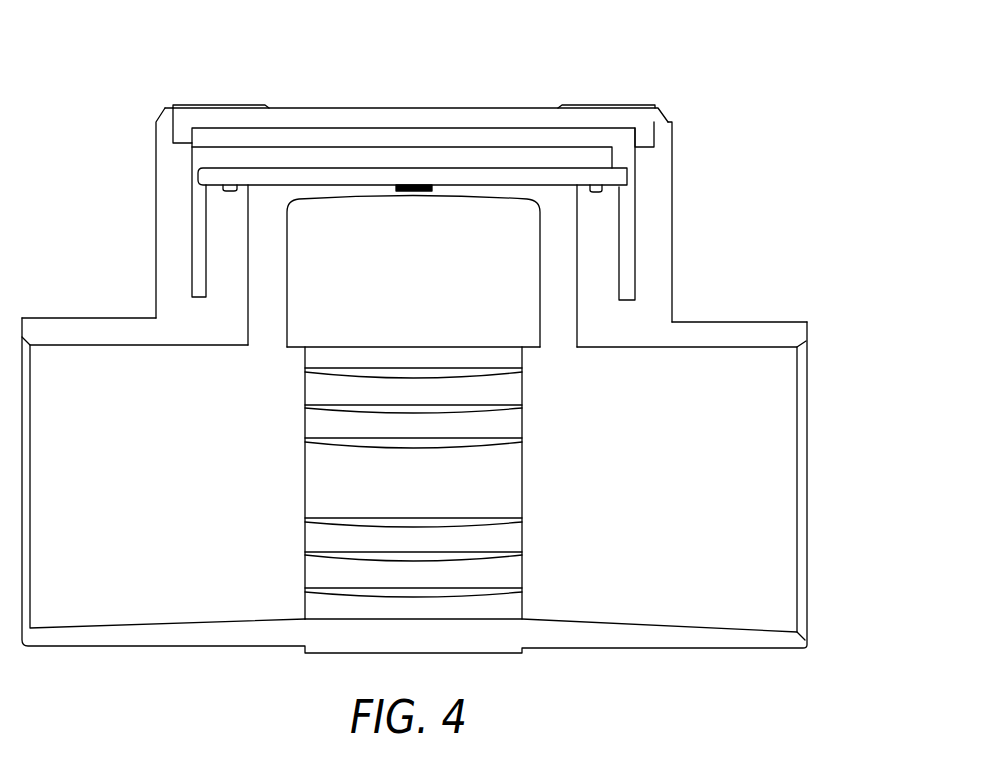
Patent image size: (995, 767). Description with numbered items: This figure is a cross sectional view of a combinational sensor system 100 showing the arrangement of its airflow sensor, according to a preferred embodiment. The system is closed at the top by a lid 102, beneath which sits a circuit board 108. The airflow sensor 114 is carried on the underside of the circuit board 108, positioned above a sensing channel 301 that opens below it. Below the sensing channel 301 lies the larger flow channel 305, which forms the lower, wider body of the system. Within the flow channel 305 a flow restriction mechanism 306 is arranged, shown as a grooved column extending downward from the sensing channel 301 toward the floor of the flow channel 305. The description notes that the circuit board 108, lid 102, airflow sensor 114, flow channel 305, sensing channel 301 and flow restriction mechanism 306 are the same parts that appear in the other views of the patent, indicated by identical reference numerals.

The combinational sensor system 100 is at (728, 58).
The lid 102 is at (222, 106).
The circuit board 108 is at (207, 175).
The airflow sensor 114 is at (418, 186).
The sensing channel 301 is at (557, 237).
The flow channel 305 is at (632, 400).
The flow restriction mechanism 306 is at (522, 483).